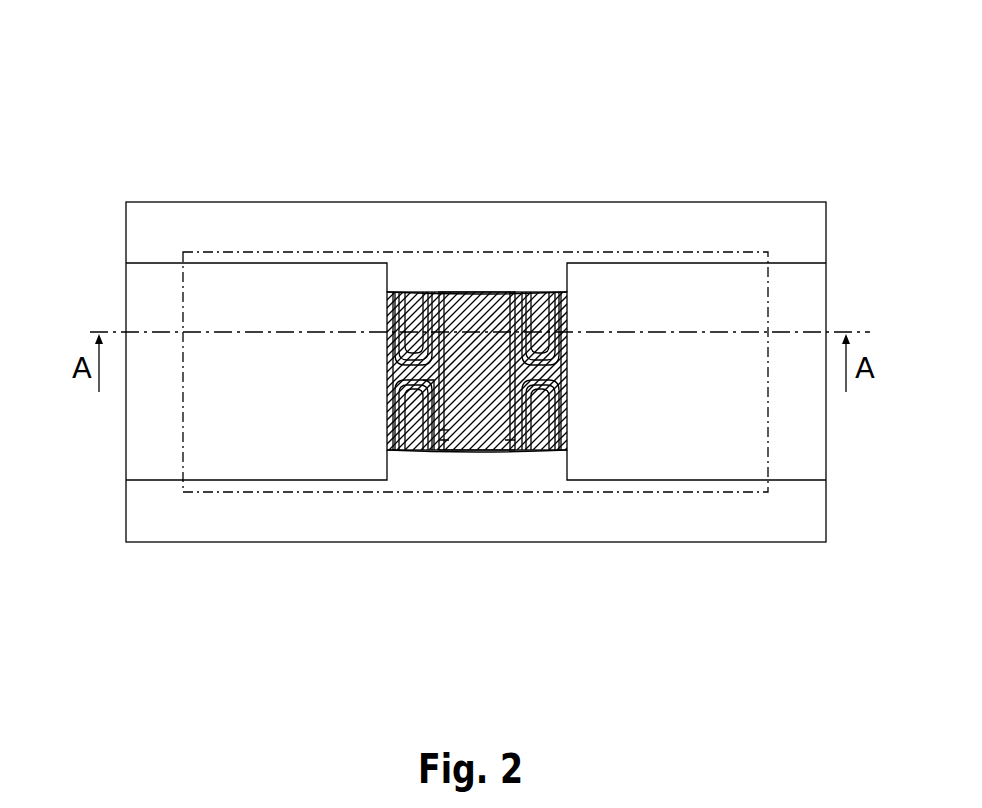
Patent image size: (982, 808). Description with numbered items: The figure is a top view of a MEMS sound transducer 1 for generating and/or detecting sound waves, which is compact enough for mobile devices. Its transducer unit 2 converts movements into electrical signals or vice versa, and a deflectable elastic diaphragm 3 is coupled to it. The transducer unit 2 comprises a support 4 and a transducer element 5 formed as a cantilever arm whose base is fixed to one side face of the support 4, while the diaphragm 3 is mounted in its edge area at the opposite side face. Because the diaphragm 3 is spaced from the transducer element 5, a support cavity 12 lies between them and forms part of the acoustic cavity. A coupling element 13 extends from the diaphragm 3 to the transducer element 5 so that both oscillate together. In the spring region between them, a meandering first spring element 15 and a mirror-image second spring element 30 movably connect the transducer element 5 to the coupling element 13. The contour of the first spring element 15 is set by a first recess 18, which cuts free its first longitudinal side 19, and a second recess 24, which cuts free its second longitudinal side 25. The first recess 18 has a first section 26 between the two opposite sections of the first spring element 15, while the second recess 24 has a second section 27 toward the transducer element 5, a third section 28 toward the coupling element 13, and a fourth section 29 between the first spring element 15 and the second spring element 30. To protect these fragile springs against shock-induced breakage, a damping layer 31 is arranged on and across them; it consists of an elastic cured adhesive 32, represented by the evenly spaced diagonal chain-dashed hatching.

The MEMS sound transducer 1 is at (151, 122).
The transducer unit 2 is at (118, 231).
The diaphragm 3 is at (467, 258).
The support 4 is at (158, 523).
The transducer element 5 is at (243, 400).
The support cavity 12 is at (512, 473).
The coupling element 13 is at (497, 292).
The first spring element 15 is at (386, 360).
The first recess 18 is at (417, 340).
The first longitudinal side 19 is at (422, 345).
The second recess 24 is at (388, 330).
The second longitudinal side 25 is at (392, 330).
The first section 26 is at (418, 452).
The second section 27 is at (396, 425).
The third section 28 is at (450, 452).
The fourth section 29 is at (390, 395).
The second spring element 30 is at (438, 452).
The damping layer 31 is at (569, 452).
The cured adhesive 32 is at (482, 452).